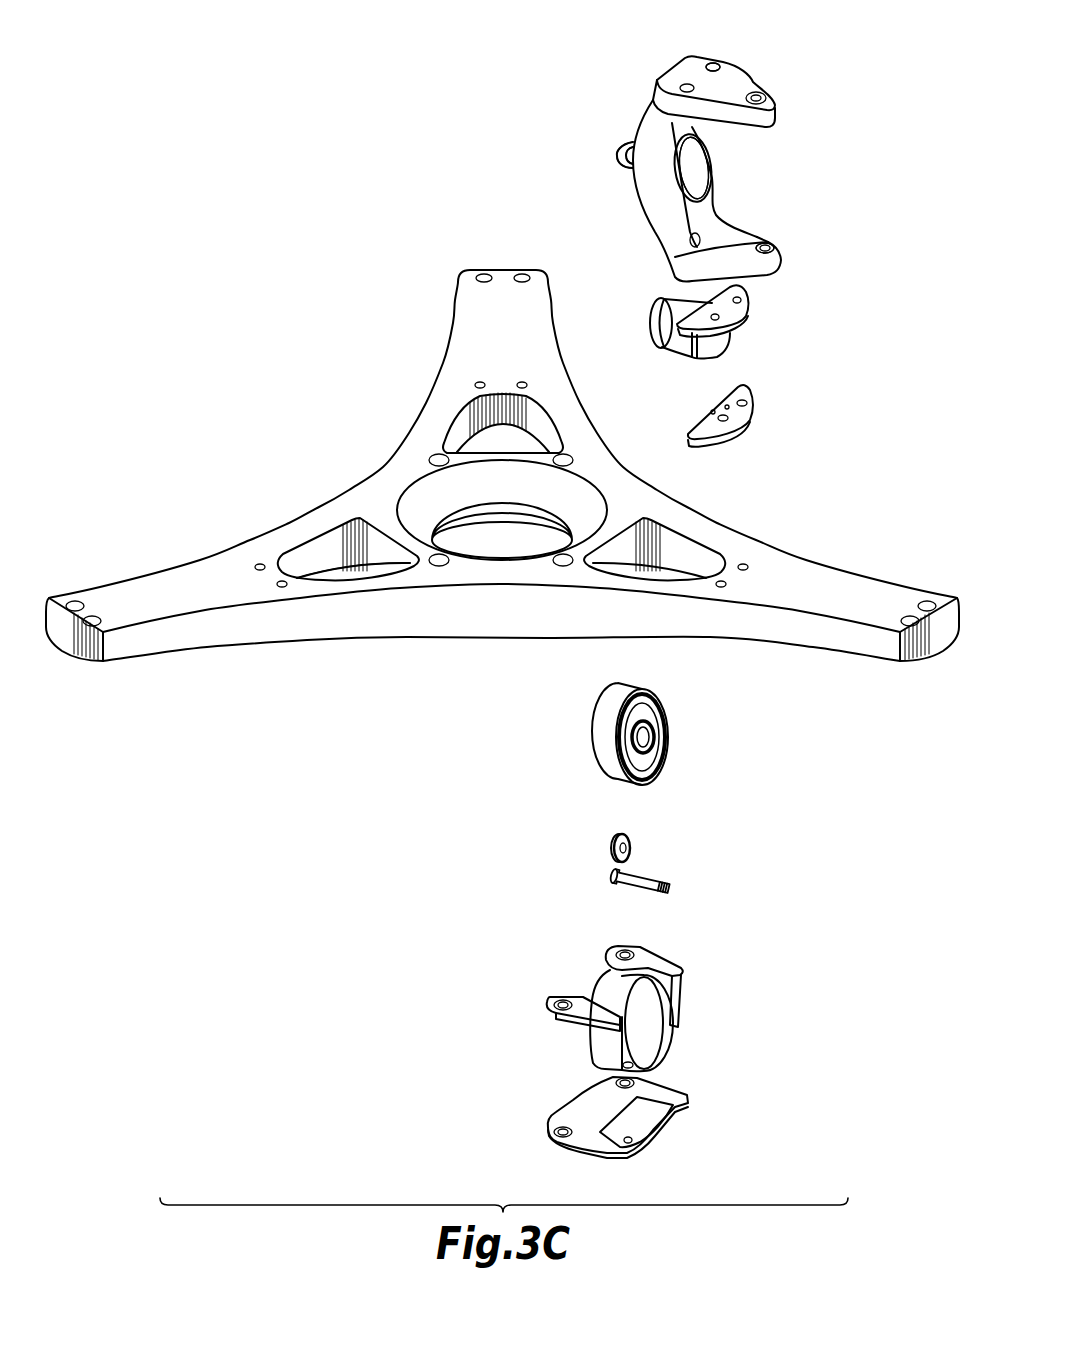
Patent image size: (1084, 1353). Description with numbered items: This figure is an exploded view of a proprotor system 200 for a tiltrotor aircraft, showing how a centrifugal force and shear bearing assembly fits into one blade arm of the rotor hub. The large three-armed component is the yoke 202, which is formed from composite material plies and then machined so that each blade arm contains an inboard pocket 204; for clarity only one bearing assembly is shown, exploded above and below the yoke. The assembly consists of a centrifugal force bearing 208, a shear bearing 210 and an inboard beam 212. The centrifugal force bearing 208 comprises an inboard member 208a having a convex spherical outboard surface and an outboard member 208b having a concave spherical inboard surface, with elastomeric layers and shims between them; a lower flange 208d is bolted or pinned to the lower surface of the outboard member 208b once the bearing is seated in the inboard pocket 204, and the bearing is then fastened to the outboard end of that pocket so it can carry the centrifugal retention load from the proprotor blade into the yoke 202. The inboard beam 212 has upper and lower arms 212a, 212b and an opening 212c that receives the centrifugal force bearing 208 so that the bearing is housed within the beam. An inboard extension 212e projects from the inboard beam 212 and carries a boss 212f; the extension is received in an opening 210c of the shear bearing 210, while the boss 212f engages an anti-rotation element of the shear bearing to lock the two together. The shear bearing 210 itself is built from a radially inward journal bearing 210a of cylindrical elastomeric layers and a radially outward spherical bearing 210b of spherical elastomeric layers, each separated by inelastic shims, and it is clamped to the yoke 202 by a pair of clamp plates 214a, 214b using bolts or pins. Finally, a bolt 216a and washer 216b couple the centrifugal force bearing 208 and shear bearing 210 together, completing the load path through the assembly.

The proprotor system 200 is at (336, 402).
The yoke 202 is at (473, 327).
The inboard pocket 204 is at (300, 553).
The centrifugal force bearing 208 is at (696, 326).
The inboard member 208a is at (655, 305).
The outboard member 208b is at (727, 340).
The lower flange 208d is at (745, 420).
The shear bearing 210 is at (635, 745).
The journal bearing 210a is at (650, 711).
The spherical bearing 210b is at (650, 775).
The opening 210c is at (648, 740).
The inboard beam 212 is at (728, 70).
The upper arm 212a is at (740, 82).
The lower arm 212b is at (745, 233).
The opening 212c is at (700, 154).
The inboard extension 212e is at (618, 166).
The boss 212f is at (615, 155).
The clamp plate 214a is at (593, 1040).
The clamp plate 214b is at (573, 1120).
The bolt 216a is at (630, 885).
The washer 216b is at (613, 843).